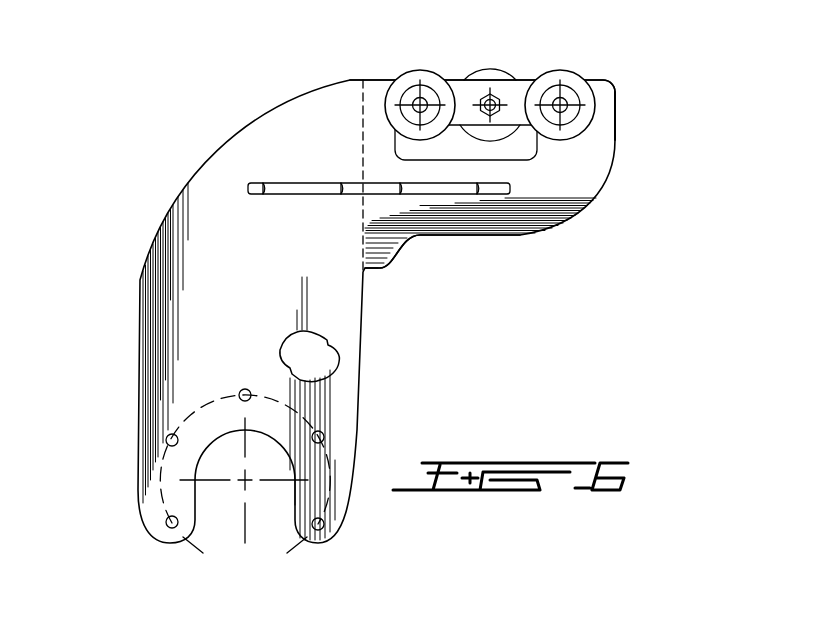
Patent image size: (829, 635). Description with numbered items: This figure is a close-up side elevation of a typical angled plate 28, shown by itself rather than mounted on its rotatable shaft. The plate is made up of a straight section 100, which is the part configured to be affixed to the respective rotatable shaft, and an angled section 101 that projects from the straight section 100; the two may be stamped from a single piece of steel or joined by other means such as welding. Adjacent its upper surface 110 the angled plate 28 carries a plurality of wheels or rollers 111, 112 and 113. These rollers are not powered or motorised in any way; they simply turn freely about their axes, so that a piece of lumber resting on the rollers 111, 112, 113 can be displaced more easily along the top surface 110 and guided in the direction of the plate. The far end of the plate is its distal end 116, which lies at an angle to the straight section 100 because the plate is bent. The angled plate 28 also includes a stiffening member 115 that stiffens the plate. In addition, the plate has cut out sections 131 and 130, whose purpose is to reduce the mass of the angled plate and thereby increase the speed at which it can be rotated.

The angled plate 28 is at (440, 238).
The straight section 100 is at (203, 358).
The angled section 101 is at (600, 183).
The upper surface 110 is at (603, 80).
The roller 111 is at (577, 120).
The roller 112 is at (490, 72).
The roller 113 is at (421, 71).
The stiffening member 115 is at (508, 192).
The distal end 116 is at (615, 115).
The cut out section 130 is at (418, 148).
The cut out section 131 is at (322, 370).